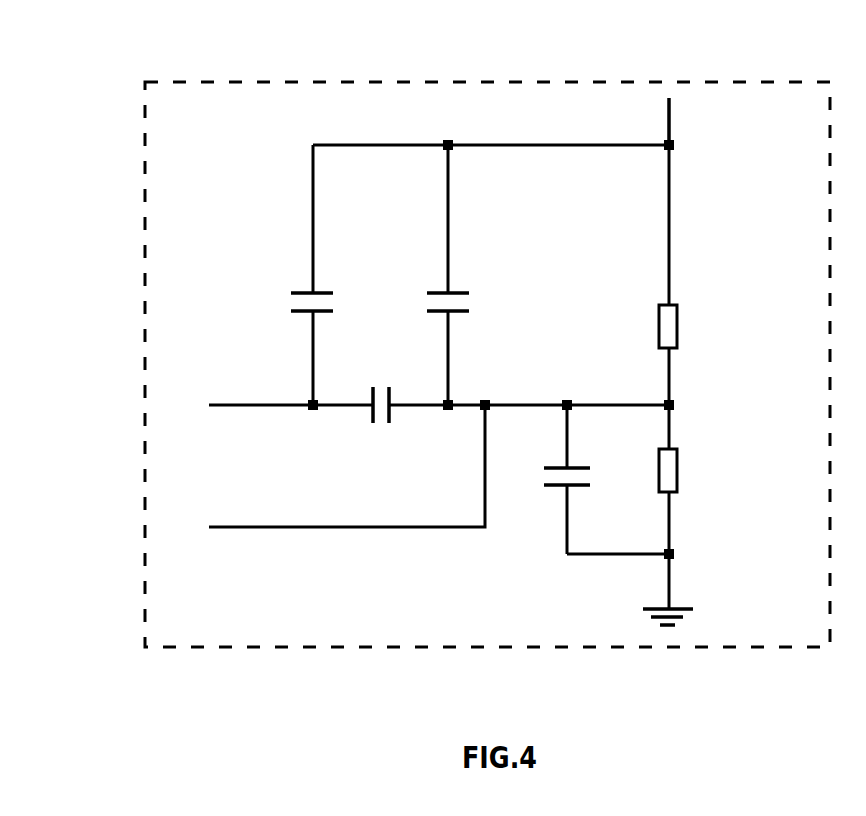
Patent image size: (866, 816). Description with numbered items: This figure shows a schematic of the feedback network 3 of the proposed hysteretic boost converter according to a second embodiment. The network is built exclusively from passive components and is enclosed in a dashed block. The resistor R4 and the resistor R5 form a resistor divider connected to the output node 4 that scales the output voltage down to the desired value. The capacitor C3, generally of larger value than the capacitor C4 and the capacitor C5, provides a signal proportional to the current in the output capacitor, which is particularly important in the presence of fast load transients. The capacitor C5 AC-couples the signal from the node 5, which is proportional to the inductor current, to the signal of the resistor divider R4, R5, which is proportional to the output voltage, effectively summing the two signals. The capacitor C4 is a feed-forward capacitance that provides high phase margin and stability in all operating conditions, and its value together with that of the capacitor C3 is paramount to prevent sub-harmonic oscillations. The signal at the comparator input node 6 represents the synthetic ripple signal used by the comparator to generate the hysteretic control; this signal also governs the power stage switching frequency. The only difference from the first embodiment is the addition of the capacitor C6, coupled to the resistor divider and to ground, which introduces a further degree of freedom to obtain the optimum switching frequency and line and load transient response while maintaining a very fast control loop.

The feedback network 3 is at (423, 82).
The output node 4 is at (727, 127).
The node 5 is at (420, 425).
The node 6 is at (341, 498).
The capacitor C3 is at (289, 308).
The capacitor C4 is at (425, 308).
The capacitor C5 is at (379, 428).
The capacitor C6 is at (545, 477).
The resistor R4 is at (646, 328).
The resistor R5 is at (645, 472).